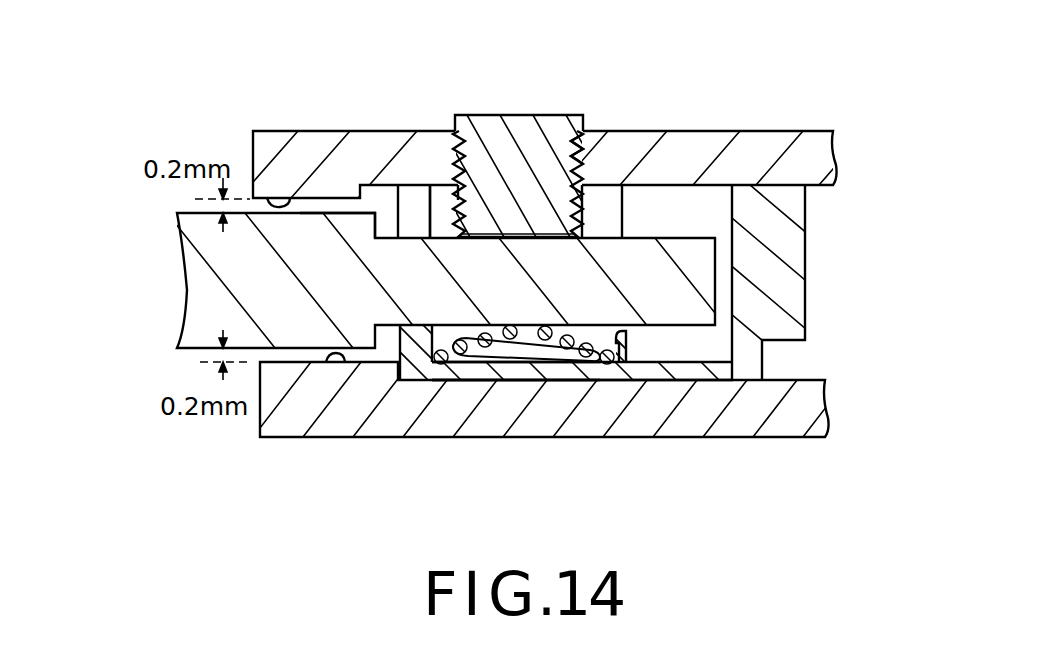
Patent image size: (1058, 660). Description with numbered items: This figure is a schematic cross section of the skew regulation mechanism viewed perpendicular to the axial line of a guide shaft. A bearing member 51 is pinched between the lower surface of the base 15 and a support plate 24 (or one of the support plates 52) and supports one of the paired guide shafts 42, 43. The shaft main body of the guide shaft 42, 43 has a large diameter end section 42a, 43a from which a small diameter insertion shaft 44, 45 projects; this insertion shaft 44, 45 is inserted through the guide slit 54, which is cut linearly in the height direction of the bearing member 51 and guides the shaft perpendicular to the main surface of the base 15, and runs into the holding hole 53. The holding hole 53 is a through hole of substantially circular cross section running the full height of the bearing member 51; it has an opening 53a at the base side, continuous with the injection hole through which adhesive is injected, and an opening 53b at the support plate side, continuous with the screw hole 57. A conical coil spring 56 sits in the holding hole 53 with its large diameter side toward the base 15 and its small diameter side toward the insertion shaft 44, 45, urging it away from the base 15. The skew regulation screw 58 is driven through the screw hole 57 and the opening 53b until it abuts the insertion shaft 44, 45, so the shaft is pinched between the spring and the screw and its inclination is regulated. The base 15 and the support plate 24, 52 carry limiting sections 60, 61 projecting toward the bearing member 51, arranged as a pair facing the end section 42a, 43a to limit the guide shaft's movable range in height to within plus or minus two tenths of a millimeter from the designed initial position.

The base 15 is at (641, 437).
The support plate 24 is at (552, 121).
The support plate 52 is at (690, 138).
The guide shaft 42 is at (426, 280).
The guide shaft 43 is at (207, 285).
The end section 42a is at (400, 142).
The end section 43a is at (343, 213).
The insertion shaft 44 is at (621, 135).
The insertion shaft 45 is at (607, 243).
The bearing member 51 is at (790, 302).
The holding hole 53 is at (620, 353).
The opening 53a is at (492, 372).
The opening 53b is at (433, 203).
The guide slit 54 is at (416, 330).
The coil spring 56 is at (566, 362).
The screw hole 57 is at (567, 134).
The skew regulation screw 58 is at (520, 115).
The limiting section 60 is at (338, 362).
The limiting section 61 is at (280, 203).